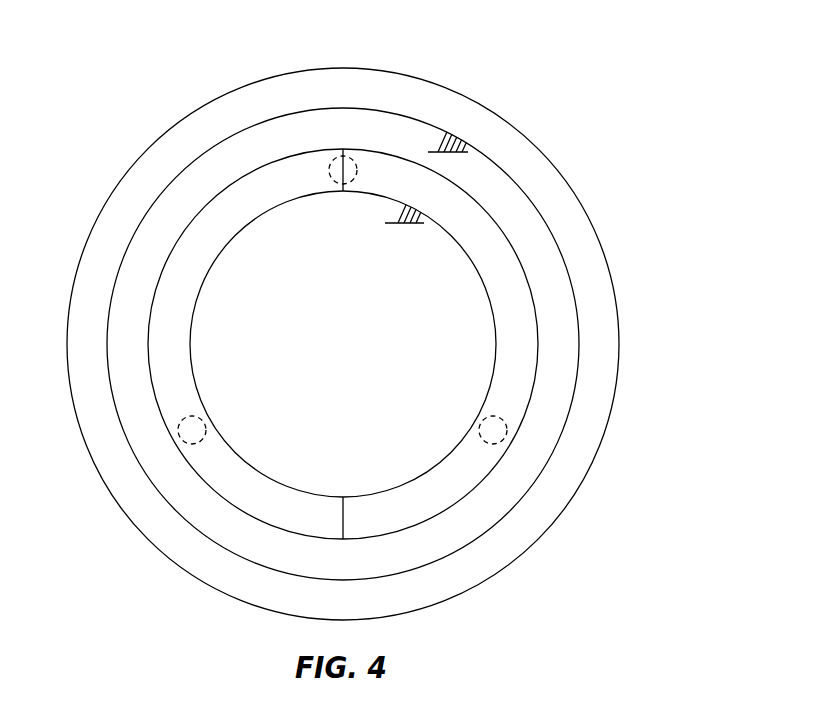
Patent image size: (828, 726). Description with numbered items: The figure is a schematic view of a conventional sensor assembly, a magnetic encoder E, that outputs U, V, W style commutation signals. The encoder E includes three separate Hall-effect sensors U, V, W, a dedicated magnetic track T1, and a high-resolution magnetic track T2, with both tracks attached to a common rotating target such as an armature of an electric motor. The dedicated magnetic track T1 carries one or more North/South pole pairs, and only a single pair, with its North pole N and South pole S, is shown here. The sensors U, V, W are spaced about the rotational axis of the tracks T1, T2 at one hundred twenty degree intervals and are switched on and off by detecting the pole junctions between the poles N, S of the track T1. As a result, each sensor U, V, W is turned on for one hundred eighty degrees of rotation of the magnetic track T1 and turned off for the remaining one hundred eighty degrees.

The magnetic encoder E is at (538, 97).
The high-resolution magnetic track T2 is at (615, 224).
The dedicated magnetic track T1 is at (469, 283).
The Hall-effect sensor U is at (357, 172).
The Hall-effect sensor V is at (485, 416).
The Hall-effect sensor W is at (188, 414).
The North pole N is at (173, 344).
The South pole S is at (514, 344).